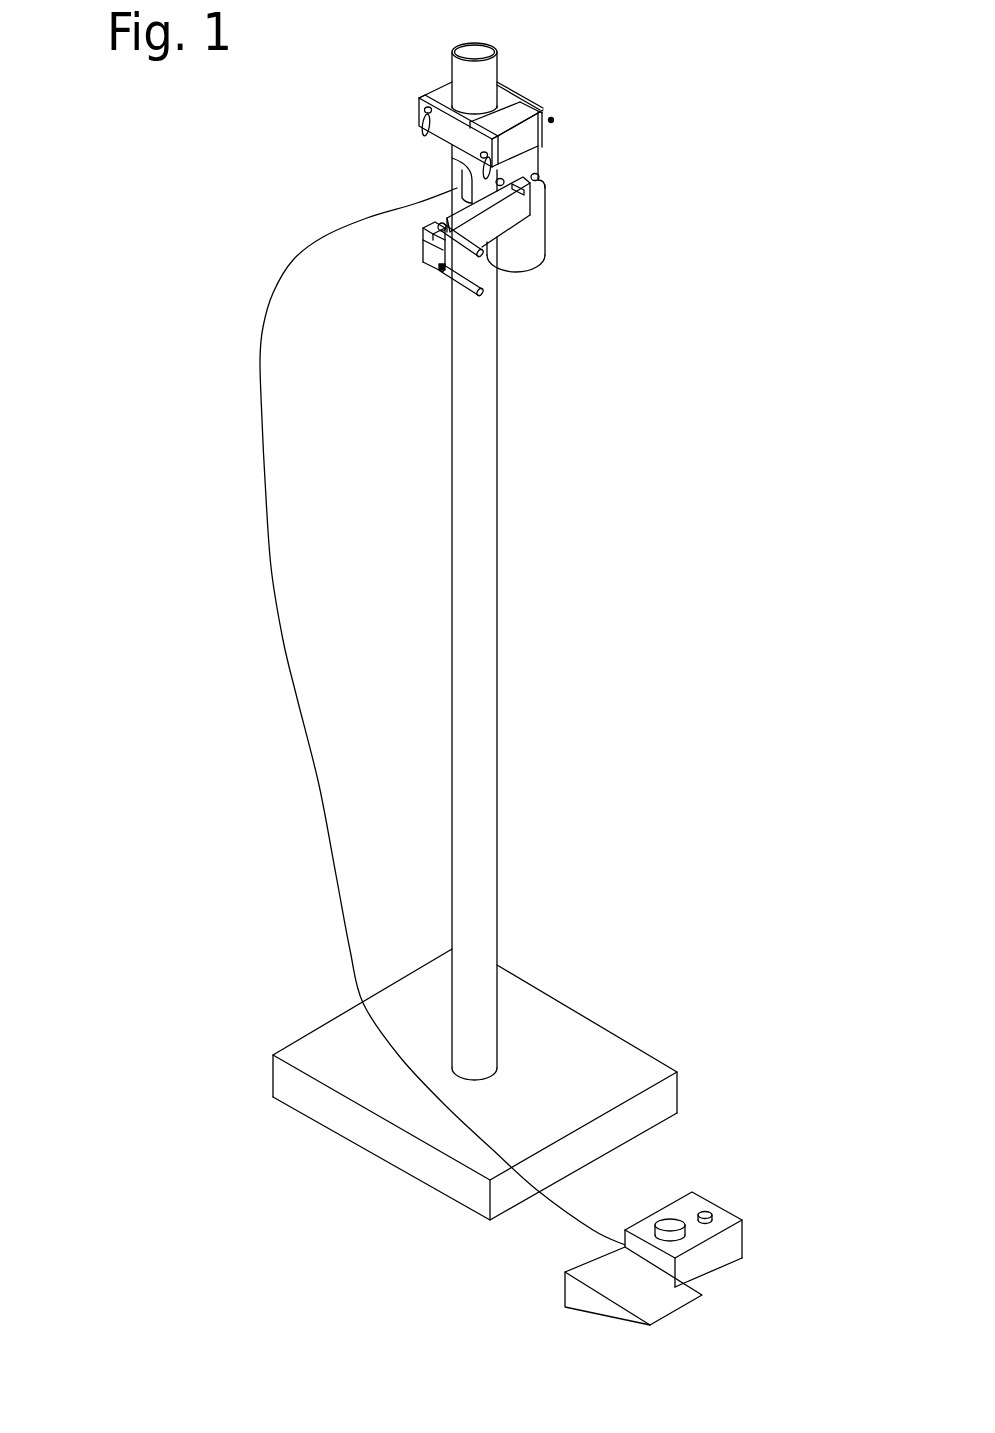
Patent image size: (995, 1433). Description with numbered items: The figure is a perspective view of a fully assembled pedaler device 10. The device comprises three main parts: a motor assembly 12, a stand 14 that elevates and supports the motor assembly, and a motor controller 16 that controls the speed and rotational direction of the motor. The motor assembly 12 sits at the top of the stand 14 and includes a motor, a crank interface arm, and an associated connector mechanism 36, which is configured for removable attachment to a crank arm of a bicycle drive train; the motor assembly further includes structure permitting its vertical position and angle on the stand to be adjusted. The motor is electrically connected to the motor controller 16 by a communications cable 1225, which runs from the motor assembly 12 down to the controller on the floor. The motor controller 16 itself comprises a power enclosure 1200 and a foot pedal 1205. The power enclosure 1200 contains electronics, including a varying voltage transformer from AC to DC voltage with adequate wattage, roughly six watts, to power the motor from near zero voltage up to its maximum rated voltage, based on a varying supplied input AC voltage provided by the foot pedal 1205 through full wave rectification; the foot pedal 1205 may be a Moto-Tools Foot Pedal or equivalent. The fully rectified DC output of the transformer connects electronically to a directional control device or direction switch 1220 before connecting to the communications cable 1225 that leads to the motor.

The pedaler device 10 is at (265, 122).
The motor assembly 12 is at (543, 106).
The stand 14 is at (503, 605).
The connector mechanism 36 is at (420, 263).
The communications cable 1225 is at (332, 875).
The motor controller 16 is at (735, 1186).
The power enclosure 1200 is at (745, 1265).
The foot pedal 1205 is at (704, 1303).
The direction switch 1220 is at (686, 1228).